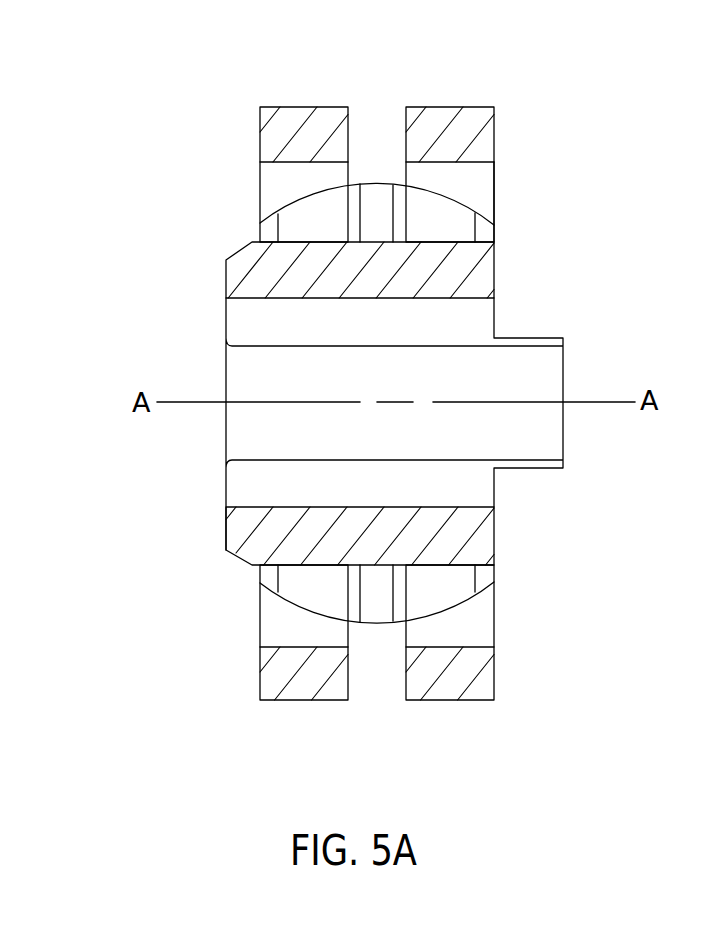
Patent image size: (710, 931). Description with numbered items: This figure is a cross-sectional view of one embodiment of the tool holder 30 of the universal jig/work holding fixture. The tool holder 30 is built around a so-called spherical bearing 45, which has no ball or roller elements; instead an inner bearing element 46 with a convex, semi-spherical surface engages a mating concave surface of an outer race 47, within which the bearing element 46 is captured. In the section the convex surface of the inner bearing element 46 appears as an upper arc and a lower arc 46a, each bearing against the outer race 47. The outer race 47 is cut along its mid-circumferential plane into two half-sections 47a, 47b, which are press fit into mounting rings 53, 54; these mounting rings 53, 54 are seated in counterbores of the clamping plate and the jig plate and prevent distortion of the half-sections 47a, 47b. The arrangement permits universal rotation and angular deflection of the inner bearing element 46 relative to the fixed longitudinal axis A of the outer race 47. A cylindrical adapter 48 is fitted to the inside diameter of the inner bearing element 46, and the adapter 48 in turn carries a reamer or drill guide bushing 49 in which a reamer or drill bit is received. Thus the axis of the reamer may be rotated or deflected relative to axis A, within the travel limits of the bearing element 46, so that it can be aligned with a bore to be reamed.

The tool holder 30 is at (142, 278).
The spherical bearing 45 is at (380, 160).
The inner bearing element 46 is at (298, 208).
The lower arcuate spring member 46a is at (403, 624).
The outer race 47 is at (527, 217).
The half-section 47a is at (267, 625).
The half-section 47b is at (483, 627).
The cylindrical adapter 48 is at (488, 285).
The reamer or drill guide bushing 49 is at (230, 487).
The mounting ring 53 is at (290, 108).
The mounting ring 54 is at (443, 108).